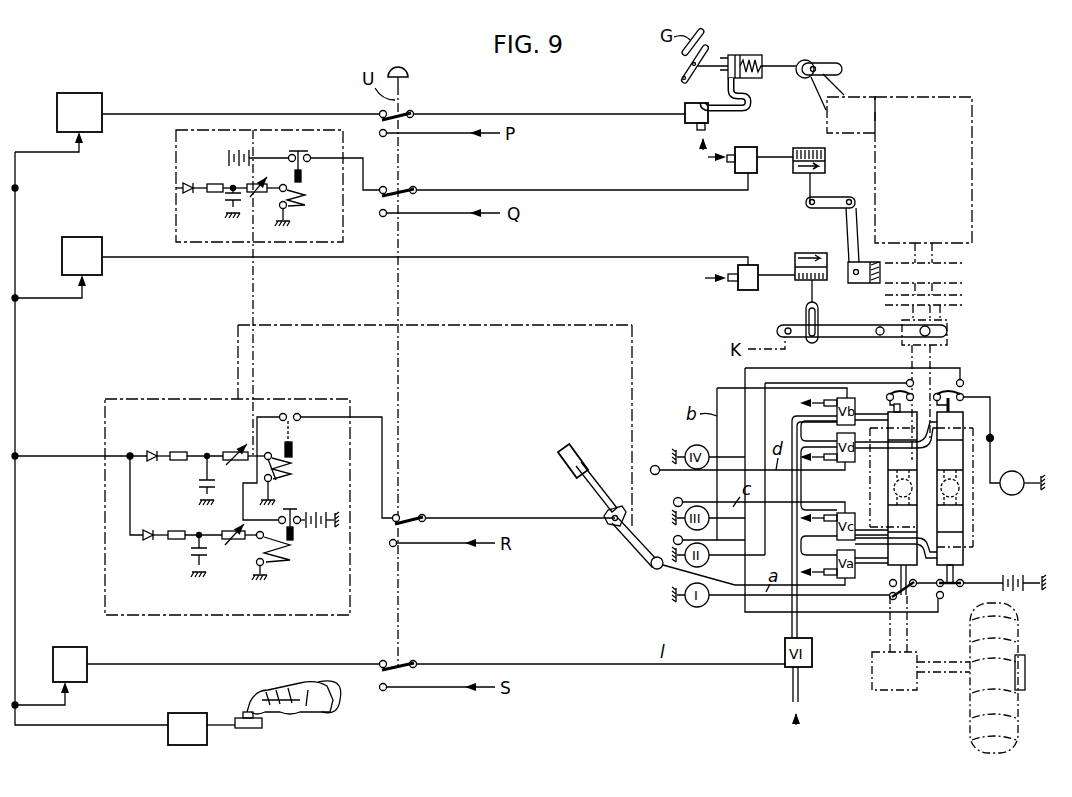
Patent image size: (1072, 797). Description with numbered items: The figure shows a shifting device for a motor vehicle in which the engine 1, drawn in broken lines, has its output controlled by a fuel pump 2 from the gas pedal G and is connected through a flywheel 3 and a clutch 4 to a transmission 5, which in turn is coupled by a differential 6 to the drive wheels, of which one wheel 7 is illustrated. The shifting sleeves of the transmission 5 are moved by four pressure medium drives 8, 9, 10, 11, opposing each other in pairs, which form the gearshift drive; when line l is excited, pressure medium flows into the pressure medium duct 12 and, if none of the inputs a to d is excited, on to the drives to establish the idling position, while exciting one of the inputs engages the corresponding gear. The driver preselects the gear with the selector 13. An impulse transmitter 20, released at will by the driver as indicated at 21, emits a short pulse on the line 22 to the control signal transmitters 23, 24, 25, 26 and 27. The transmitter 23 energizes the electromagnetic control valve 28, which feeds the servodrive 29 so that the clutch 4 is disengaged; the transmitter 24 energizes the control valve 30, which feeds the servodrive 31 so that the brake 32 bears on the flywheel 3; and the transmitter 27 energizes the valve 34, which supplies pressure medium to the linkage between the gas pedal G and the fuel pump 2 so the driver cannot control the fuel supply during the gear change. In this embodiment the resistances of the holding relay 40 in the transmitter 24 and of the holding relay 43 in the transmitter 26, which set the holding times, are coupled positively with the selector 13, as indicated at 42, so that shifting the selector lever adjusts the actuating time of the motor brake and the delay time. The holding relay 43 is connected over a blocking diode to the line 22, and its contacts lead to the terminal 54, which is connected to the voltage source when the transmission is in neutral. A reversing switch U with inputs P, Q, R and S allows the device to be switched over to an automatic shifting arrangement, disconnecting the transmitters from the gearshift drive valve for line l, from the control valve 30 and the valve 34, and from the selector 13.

The motor vehicle engine 1 is at (918, 97).
The fuel pump 2 is at (862, 97).
The flywheel 3 is at (963, 273).
The clutch 4 is at (963, 299).
The transmission 5 is at (968, 542).
The differential 6 is at (894, 695).
The drive wheel 7 is at (975, 709).
The pressure medium drive 8 is at (902, 532).
The pressure medium drive 9 is at (902, 484).
The pressure medium drive 10 is at (950, 526).
The pressure medium drive 11 is at (950, 481).
The pressure medium duct 12 is at (800, 629).
The selector 13 is at (593, 490).
The impulse transmitter 20 is at (172, 740).
The release actuator 21 is at (249, 730).
The signal line 22 is at (17, 612).
The control signal transmitter 23 is at (93, 273).
The control signal transmitter 24 is at (176, 223).
The control signal transmitter 25 is at (80, 658).
The control signal transmitter 26 is at (107, 557).
The control signal transmitter 27 is at (90, 103).
The electromagnetic control valve 28 is at (746, 290).
The servodrive 29 is at (817, 252).
The electromagnetic control valve 30 is at (757, 170).
The servodrive 31 is at (826, 160).
The brake 32 is at (866, 285).
The electromagnetic valve 34 is at (692, 117).
The holding relay 40 is at (287, 205).
The coupling to selector 42 is at (255, 130).
The holding relay 43 is at (278, 480).
The terminal 54 is at (993, 436).